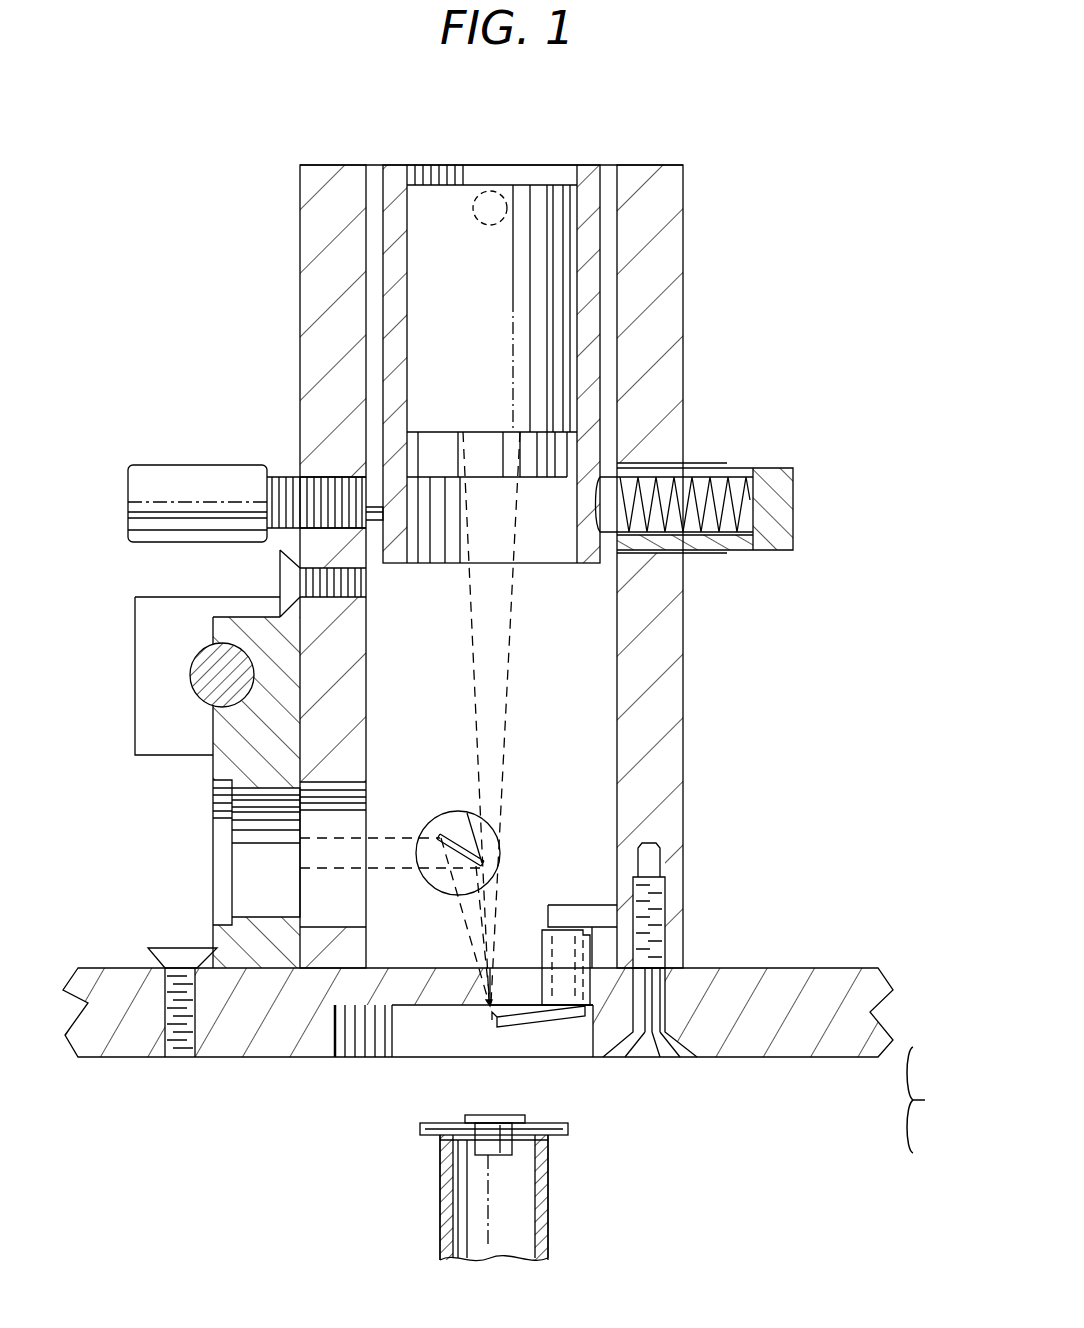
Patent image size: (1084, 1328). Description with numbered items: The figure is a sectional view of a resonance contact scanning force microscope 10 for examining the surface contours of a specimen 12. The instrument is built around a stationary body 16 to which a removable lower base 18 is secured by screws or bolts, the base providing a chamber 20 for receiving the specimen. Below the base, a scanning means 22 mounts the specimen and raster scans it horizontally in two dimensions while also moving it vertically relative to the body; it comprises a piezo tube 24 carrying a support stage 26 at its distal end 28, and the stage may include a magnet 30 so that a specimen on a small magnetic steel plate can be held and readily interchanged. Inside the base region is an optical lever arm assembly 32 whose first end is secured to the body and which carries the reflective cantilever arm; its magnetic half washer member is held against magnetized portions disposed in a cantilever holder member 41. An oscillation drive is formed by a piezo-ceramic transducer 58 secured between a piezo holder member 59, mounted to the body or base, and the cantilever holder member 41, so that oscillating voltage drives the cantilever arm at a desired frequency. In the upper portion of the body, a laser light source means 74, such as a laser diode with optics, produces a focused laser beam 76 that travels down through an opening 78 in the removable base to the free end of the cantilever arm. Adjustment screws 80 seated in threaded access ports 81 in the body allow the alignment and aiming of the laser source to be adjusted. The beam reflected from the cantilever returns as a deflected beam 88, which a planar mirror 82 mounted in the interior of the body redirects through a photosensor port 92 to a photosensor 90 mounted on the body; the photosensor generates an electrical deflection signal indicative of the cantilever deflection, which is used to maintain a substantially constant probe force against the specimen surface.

The resonance contact scanning force microscope 10 is at (735, 162).
The specimen 12 is at (495, 1116).
The stationary body 16 is at (690, 625).
The removable lower base 18 is at (805, 970).
The chamber 20 is at (368, 1058).
The scanning means 22 is at (565, 1208).
The piezo tube 24 is at (440, 1207).
The support stage 26 is at (420, 1127).
The distal end 28 is at (545, 1143).
The magnet 30 is at (492, 1156).
The optical lever arm assembly 32 is at (497, 1040).
The cantilever holder member 41 is at (585, 1017).
The piezo-ceramic transducer 58 is at (544, 931).
The piezo holder member 59 is at (580, 905).
The laser light source means 74 is at (417, 342).
The focused laser beam 76 is at (510, 660).
The opening 78 is at (490, 1002).
The adjustment screws 80 is at (203, 465).
The threaded access ports 81 is at (290, 477).
The planar mirror 82 is at (476, 846).
The deflected beam 88 is at (400, 836).
The photosensor 90 is at (242, 822).
The photosensor port 92 is at (362, 804).